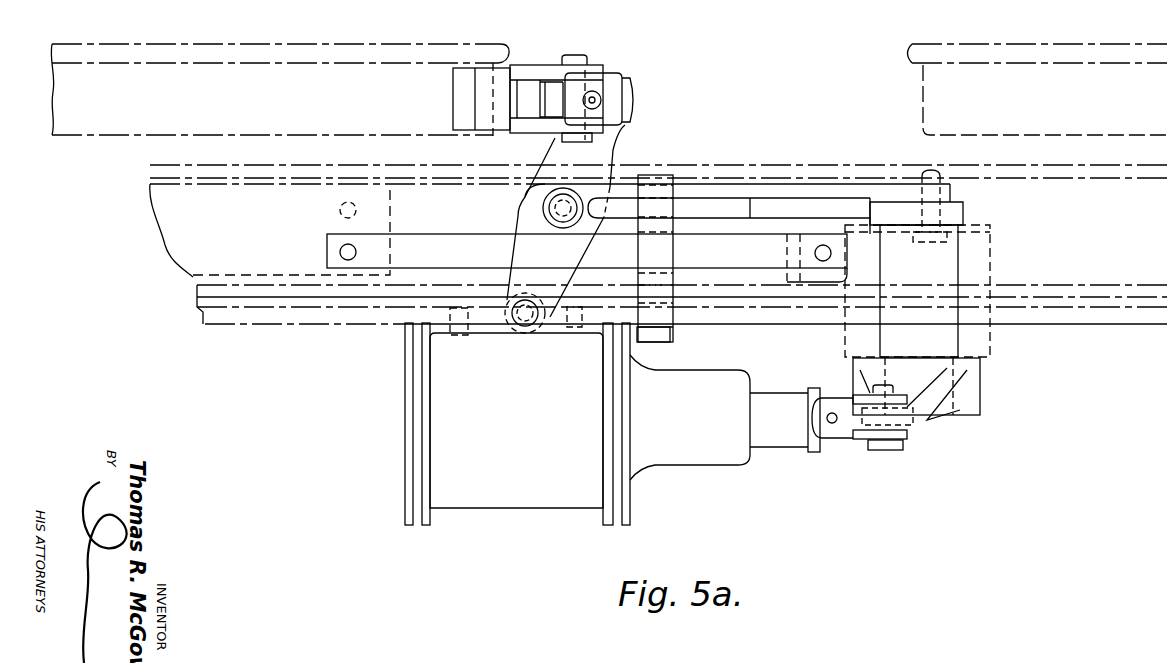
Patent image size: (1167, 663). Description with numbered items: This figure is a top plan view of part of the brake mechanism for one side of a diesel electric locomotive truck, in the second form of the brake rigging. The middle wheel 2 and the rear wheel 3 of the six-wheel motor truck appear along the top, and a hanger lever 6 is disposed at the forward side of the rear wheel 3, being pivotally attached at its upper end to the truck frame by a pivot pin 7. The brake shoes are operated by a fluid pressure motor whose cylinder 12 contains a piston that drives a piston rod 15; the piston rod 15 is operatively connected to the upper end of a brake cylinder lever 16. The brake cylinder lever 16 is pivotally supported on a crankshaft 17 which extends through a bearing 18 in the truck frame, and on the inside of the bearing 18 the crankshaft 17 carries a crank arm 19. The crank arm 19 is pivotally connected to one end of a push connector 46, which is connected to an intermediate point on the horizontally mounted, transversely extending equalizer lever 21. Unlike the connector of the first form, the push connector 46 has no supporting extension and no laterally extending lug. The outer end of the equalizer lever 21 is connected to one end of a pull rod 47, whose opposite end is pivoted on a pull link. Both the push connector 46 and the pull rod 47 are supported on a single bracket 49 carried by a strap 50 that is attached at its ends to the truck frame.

The middle wheel 2 is at (1078, 50).
The rear wheel 3 is at (314, 50).
The hanger lever 6 is at (628, 100).
The pivot pin 7 is at (575, 58).
The cylinder 12 is at (528, 495).
The piston rod 15 is at (860, 440).
The brake cylinder lever 16 is at (925, 425).
The crankshaft 17 is at (948, 342).
The bearing 18 is at (985, 268).
The crank arm 19 is at (965, 213).
The equalizer lever 21 is at (605, 152).
The push connector 46 is at (727, 195).
The pull rod 47 is at (1131, 318).
The bracket 49 is at (672, 340).
The strap 50 is at (450, 248).